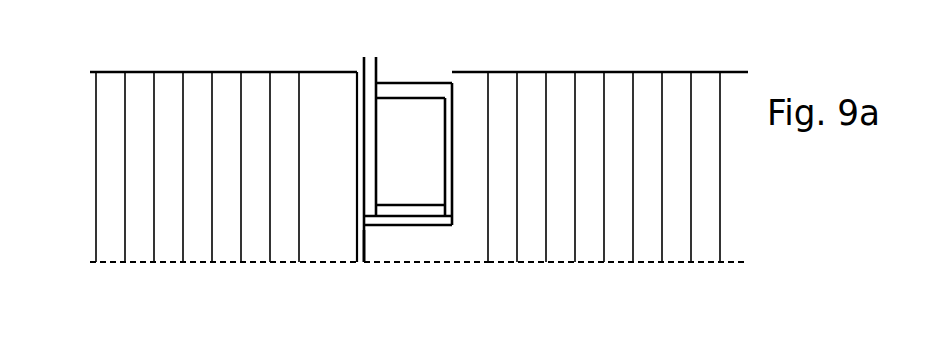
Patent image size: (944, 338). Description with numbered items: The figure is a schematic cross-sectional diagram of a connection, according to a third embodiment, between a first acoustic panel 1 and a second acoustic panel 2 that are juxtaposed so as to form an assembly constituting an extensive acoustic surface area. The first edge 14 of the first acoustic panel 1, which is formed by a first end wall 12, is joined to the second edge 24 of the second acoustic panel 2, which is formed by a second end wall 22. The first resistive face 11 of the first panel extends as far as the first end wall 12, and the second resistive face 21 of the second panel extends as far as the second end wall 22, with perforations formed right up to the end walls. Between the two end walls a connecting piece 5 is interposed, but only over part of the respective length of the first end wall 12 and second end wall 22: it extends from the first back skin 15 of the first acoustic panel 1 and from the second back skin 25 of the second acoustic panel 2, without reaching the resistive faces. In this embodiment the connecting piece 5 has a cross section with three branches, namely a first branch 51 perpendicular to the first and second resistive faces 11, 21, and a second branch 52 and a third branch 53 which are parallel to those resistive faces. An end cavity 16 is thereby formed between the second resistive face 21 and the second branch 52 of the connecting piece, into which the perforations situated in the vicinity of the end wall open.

The first acoustic panel 1 is at (102, 162).
The second acoustic panel 2 is at (716, 191).
The connecting piece 5 is at (372, 70).
The first resistive face 11 is at (253, 263).
The first end wall 12 is at (357, 188).
The first edge 14 is at (357, 58).
The first back skin 15 is at (198, 71).
The end cavity 16 is at (405, 252).
The second resistive face 21 is at (647, 263).
The second end wall 22 is at (363, 247).
The second edge 24 is at (412, 116).
The second back skin 25 is at (645, 71).
The first branch 51 is at (373, 146).
The second branch 52 is at (407, 208).
The third branch 53 is at (420, 93).